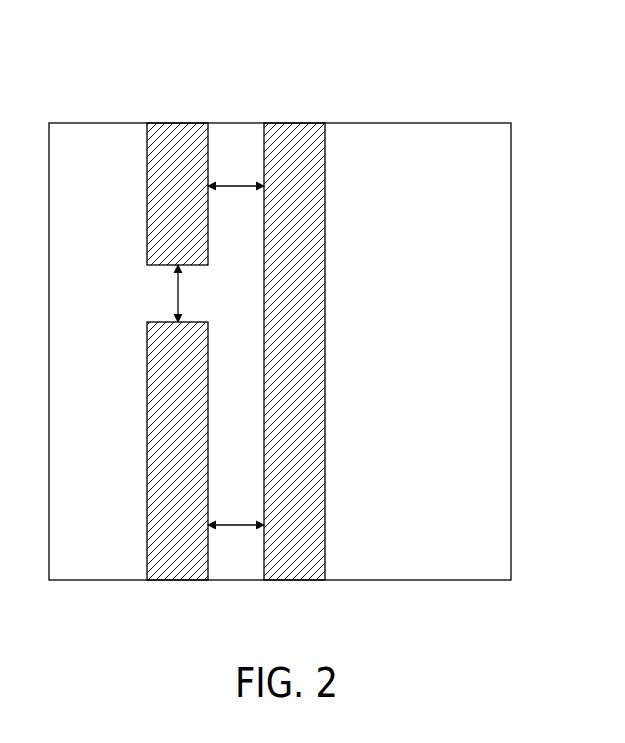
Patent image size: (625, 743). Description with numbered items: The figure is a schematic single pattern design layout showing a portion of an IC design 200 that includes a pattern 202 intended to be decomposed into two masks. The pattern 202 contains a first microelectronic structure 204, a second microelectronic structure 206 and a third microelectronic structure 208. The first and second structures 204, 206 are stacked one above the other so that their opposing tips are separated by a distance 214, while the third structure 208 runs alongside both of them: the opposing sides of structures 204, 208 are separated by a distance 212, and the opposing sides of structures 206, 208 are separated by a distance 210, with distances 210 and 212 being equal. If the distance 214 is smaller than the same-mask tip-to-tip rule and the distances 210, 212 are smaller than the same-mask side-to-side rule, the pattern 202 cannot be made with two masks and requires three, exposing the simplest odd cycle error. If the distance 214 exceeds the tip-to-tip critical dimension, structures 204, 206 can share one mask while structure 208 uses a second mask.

The IC design 200 is at (483, 112).
The pattern 202 is at (511, 425).
The first microelectronic structure 204 is at (147, 155).
The second microelectronic structure 206 is at (147, 415).
The third microelectronic structure 208 is at (325, 425).
The distance 210 is at (237, 524).
The distance 212 is at (239, 185).
The distance 214 is at (178, 295).